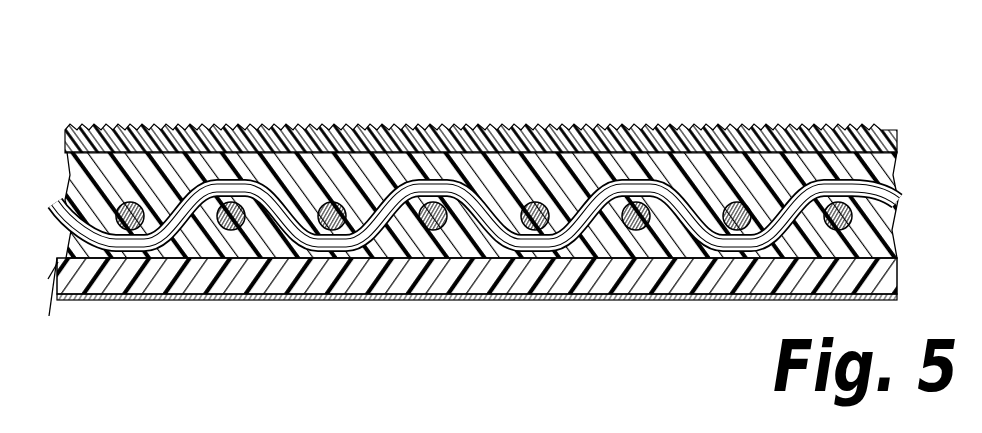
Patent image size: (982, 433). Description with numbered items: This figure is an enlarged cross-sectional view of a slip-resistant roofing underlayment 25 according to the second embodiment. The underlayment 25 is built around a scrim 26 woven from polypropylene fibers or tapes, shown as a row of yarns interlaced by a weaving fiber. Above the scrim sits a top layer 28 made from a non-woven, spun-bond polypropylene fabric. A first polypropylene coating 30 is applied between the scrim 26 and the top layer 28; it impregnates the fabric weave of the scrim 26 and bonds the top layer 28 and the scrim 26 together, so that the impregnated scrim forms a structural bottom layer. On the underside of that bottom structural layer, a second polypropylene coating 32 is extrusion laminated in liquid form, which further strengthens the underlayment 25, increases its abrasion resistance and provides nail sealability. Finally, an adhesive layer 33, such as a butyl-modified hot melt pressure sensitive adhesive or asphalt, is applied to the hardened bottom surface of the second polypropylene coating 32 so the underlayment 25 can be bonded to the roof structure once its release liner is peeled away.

The roofing underlayment 25 is at (504, 193).
The scrim 26 is at (886, 213).
The top layer 28 is at (896, 132).
The first polypropylene coating 30 is at (742, 168).
The second polypropylene coating 32 is at (685, 281).
The adhesive layer 33 is at (540, 298).